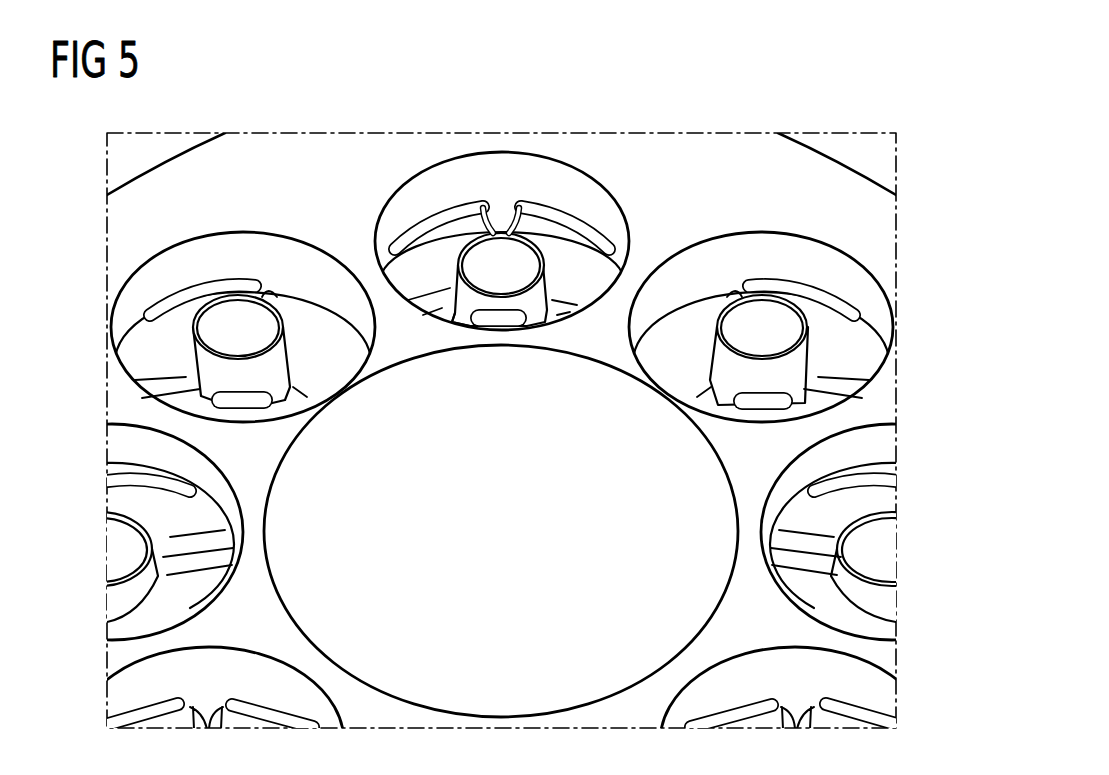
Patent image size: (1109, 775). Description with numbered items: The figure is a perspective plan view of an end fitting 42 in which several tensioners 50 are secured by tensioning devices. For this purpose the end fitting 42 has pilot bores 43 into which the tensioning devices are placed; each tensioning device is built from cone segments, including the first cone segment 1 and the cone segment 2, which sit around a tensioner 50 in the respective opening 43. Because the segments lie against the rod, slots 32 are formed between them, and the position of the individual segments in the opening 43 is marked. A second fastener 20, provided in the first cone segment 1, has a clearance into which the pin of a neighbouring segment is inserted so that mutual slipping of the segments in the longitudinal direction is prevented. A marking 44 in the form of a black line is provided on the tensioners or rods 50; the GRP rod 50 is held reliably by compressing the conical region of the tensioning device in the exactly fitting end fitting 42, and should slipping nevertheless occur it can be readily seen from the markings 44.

The first cone segment 1 is at (440, 236).
The cone segment 2 is at (566, 236).
The second fastener 20 is at (457, 320).
The slot 32 is at (499, 226).
The end fitting 42 is at (110, 168).
The pilot bore 43 is at (551, 176).
The marking 44 is at (233, 290).
The tensioner 50 is at (530, 258).